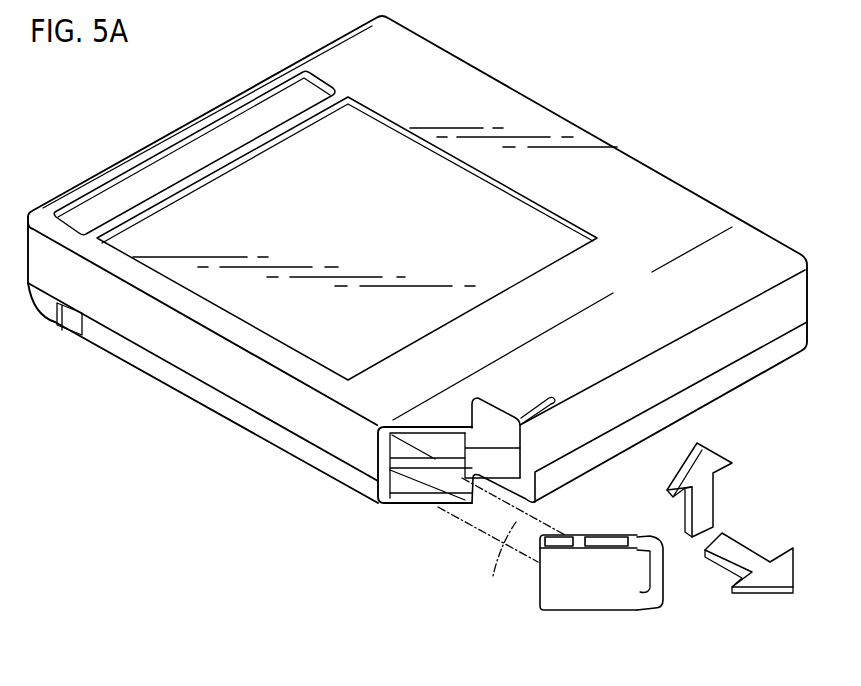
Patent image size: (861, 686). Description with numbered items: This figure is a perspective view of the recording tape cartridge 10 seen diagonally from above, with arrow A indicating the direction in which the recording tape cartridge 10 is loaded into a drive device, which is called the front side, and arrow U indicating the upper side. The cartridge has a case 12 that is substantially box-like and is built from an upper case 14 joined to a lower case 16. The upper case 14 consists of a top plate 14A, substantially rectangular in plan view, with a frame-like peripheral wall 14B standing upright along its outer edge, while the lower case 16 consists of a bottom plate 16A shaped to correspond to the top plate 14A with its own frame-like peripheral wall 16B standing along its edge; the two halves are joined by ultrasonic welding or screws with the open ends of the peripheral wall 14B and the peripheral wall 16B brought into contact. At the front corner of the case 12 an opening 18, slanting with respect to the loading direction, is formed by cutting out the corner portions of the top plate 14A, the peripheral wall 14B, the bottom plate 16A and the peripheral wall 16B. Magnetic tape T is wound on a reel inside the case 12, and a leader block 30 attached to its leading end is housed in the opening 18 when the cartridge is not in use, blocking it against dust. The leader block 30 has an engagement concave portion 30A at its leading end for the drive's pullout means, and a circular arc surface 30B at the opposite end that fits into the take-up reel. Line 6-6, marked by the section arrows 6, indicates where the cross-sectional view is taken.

The recording tape cartridge 10 is at (588, 72).
The case 12 is at (780, 382).
The upper case 14 is at (694, 373).
The top plate 14A is at (688, 210).
The peripheral wall 14B is at (262, 392).
The lower case 16 is at (693, 413).
The bottom plate 16A is at (402, 495).
The peripheral wall 16B is at (295, 447).
The opening 18 is at (450, 437).
The line 6- 6 is at (630, 137).
The leader block 30 is at (609, 571).
The engagement concave portion 30A is at (645, 590).
The circular arc surface 30B is at (542, 580).
The magnetic tape T is at (501, 537).
The arrow U is at (707, 501).
The arrow A is at (738, 553).